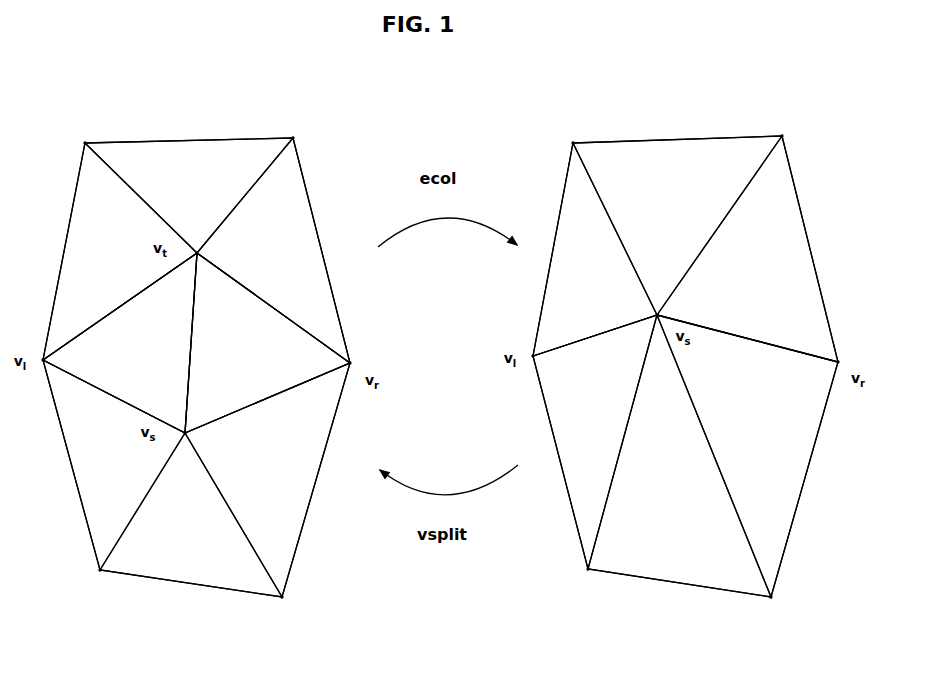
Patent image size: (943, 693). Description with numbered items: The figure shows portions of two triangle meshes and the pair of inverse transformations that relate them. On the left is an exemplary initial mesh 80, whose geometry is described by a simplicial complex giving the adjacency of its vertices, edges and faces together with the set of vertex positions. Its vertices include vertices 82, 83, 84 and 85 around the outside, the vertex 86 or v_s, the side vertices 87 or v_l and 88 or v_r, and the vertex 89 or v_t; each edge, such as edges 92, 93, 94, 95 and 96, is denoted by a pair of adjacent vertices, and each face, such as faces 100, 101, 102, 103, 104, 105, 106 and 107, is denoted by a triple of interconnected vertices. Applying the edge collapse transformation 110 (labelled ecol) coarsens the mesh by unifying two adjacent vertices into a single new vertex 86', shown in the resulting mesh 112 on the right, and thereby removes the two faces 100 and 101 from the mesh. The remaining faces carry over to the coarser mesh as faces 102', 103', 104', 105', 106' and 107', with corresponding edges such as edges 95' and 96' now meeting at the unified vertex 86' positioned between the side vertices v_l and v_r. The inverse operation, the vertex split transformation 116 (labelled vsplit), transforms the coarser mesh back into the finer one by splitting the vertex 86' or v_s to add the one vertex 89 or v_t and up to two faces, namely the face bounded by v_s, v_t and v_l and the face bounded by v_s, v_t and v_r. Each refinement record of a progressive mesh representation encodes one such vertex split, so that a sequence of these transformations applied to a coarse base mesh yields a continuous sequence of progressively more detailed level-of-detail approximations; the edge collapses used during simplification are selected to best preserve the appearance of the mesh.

The mesh 80 is at (62, 157).
The vertex 82 is at (85, 141).
The vertex 83 is at (293, 136).
The vertex 84 is at (282, 599).
The vertex 85 is at (100, 572).
The vertex 86 is at (213, 444).
The unified vertex 86' is at (687, 303).
The vertex 87 is at (45, 360).
The vertex 88 is at (352, 363).
The vertex 89 is at (199, 253).
The edge 92 is at (191, 345).
The edge 93 is at (128, 301).
The edge 94 is at (267, 302).
The edge 95 is at (267, 400).
The edge 95' is at (747, 334).
The edge 96 is at (114, 398).
The edge 96' is at (595, 323).
The face 100 is at (120, 343).
The face 101 is at (267, 343).
The face 102 is at (120, 251).
The face 102' is at (595, 249).
The face 103 is at (114, 465).
The face 103' is at (595, 442).
The face 104 is at (273, 250).
The face 104' is at (747, 249).
The face 105 is at (267, 480).
The face 105' is at (747, 456).
The face 106 is at (189, 195).
The face 106' is at (677, 225).
The face 107 is at (191, 515).
The face 107' is at (679, 456).
The edge collapse transformation 110 is at (440, 219).
The mesh 112 is at (549, 142).
The vertex split transformation 116 is at (441, 493).